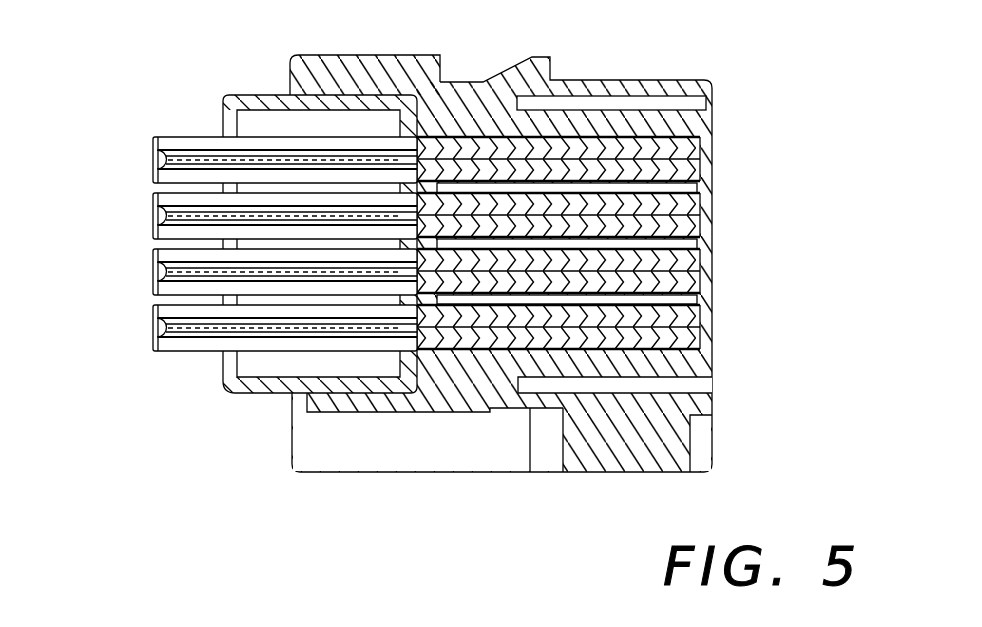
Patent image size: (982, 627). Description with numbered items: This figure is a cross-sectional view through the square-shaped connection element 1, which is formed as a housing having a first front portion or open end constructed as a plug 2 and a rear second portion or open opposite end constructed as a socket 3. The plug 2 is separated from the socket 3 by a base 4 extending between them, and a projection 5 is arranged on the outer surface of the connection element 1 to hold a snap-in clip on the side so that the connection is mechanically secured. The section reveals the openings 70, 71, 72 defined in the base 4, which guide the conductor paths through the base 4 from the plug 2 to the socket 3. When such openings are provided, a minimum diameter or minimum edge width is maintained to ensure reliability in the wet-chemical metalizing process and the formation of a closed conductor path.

The connection element 1 is at (488, 375).
The plug 2 is at (150, 265).
The socket 3 is at (700, 283).
The base 4 is at (362, 85).
The projection 5 is at (387, 82).
The opening 70 is at (433, 165).
The opening 71 is at (433, 235).
The opening 72 is at (420, 272).